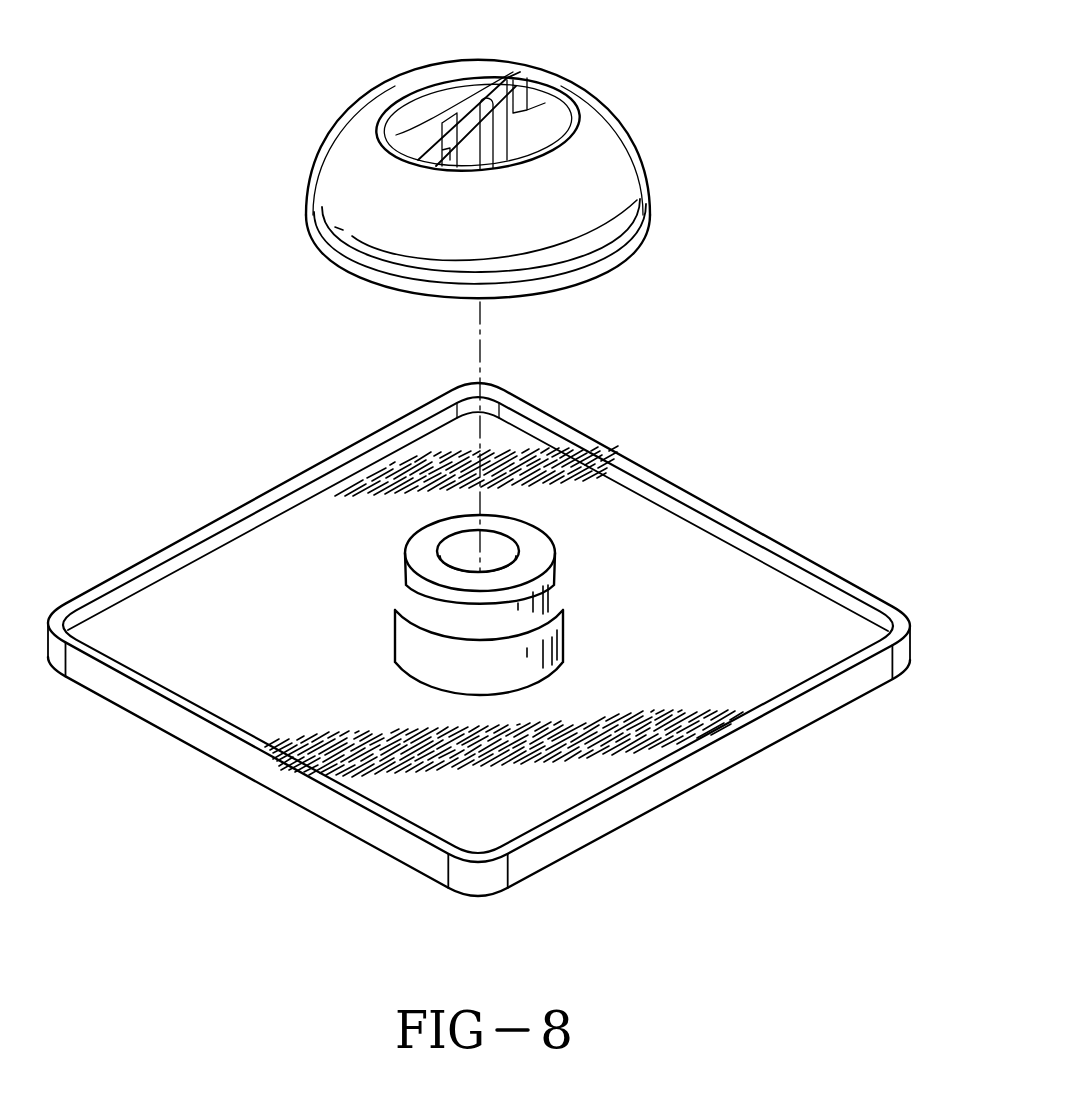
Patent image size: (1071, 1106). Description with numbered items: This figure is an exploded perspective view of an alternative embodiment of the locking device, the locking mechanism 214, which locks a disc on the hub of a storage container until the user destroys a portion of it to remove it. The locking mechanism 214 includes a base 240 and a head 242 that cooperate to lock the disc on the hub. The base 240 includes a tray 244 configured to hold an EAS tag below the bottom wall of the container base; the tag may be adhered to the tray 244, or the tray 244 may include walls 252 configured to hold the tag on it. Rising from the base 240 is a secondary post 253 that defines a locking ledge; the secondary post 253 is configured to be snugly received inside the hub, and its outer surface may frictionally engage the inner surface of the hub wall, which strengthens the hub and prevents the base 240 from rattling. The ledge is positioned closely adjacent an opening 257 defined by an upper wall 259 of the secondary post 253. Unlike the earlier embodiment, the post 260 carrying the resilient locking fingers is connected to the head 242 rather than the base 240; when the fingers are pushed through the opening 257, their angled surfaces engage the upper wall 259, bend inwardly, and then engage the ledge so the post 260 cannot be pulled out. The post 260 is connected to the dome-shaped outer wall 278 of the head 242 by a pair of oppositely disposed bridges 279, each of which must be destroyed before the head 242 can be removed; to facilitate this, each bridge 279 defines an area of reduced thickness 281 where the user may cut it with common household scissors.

The locking mechanism 214 is at (786, 100).
The base 240 is at (165, 524).
The head 242 is at (295, 153).
The tray 244 is at (698, 556).
The walls 252 is at (830, 578).
The secondary post 253 is at (580, 613).
The opening 257 is at (505, 538).
The upper wall 259 is at (530, 545).
The post 260 is at (505, 138).
The dome-shaped outer wall 278 is at (620, 178).
The bridges 279 is at (402, 150).
The area of reduced thickness 281 is at (440, 125).